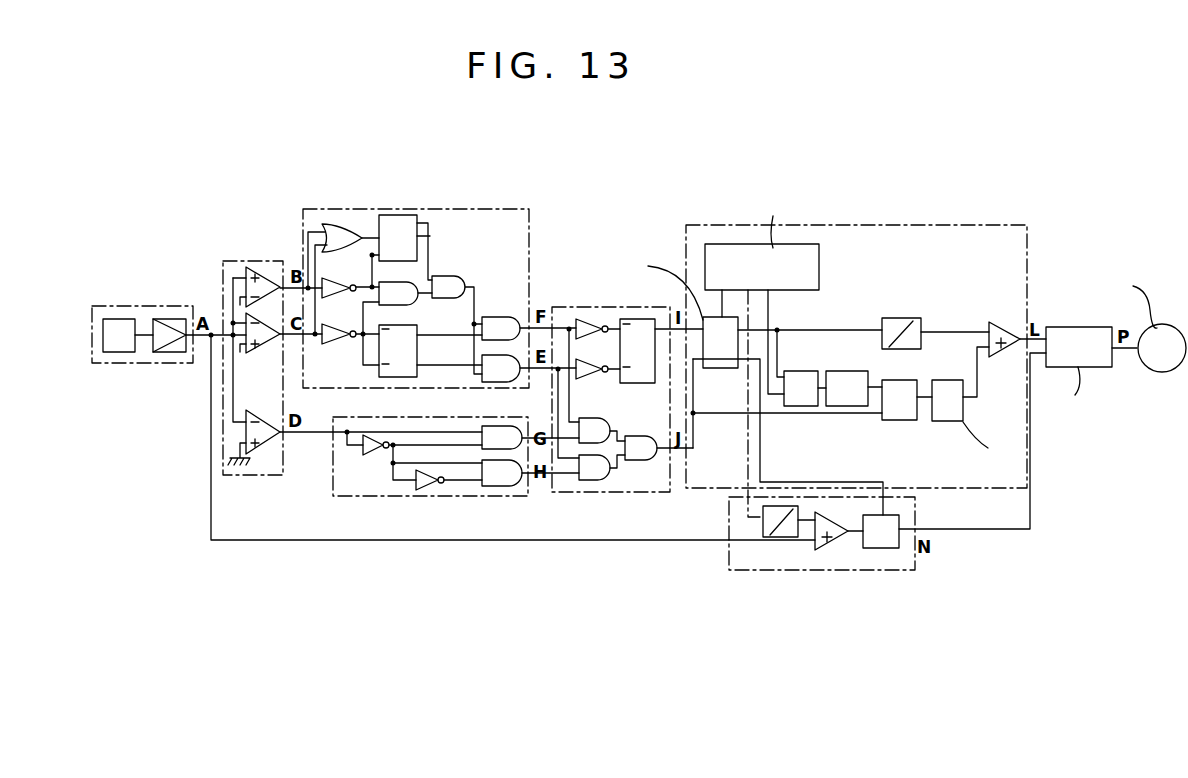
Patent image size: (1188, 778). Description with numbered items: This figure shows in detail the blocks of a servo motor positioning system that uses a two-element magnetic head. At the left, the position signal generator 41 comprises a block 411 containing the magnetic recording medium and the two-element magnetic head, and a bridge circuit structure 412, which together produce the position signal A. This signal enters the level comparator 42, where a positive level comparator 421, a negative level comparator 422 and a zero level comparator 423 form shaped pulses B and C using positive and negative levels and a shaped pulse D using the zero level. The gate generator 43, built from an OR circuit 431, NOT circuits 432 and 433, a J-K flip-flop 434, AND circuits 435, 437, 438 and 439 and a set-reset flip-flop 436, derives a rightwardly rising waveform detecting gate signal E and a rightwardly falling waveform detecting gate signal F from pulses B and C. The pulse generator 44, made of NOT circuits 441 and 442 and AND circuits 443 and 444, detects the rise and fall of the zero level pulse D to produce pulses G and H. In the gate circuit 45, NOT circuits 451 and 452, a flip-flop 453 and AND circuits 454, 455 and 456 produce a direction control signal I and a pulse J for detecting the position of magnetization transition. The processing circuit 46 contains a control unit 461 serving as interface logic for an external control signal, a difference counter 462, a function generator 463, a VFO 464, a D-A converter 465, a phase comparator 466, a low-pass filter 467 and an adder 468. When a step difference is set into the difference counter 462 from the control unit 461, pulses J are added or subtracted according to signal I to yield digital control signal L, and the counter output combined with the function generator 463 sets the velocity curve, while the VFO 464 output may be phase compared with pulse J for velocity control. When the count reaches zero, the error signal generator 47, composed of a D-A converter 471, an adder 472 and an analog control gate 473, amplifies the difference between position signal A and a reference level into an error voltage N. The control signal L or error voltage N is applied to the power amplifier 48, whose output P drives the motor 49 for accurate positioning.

The position signal generator 41 is at (106, 363).
The block including the magnetic recording medium and the two-element magnetic head 411 is at (114, 319).
The bridge circuit structure 412 is at (180, 352).
The level comparator 42 is at (232, 261).
The positive level comparator 421 is at (270, 267).
The negative level comparator 422 is at (263, 353).
The zero level comparator 423 is at (270, 440).
The gate generator 43 is at (332, 209).
The OR circuit 431 is at (352, 224).
The NOT circuit 432 is at (350, 279).
The NOT circuit 433 is at (338, 344).
The J-K flip-flop 434 is at (421, 216).
The AND circuit 435 is at (405, 284).
The set-reset flip-flop 436 is at (406, 377).
The AND circuit 437 is at (458, 276).
The AND circuit 438 is at (500, 317).
The AND circuit 439 is at (488, 356).
The pulse generator 44 is at (380, 417).
The NOT circuit 441 is at (372, 455).
The NOT circuit 442 is at (429, 490).
The AND circuit 443 is at (494, 426).
The AND circuit 444 is at (503, 486).
The gate circuit 45 is at (556, 307).
The NOT circuit 451 is at (594, 319).
The NOT circuit 452 is at (593, 379).
The flip-flop 453 is at (643, 383).
The AND circuit 454 is at (610, 422).
The AND circuit 455 is at (593, 480).
The AND circuit 456 is at (640, 460).
The processing circuit 46 is at (925, 225).
The control unit 461 is at (819, 272).
The difference counter 462 is at (738, 325).
The function generator 463 is at (801, 406).
The VFO 464 is at (851, 406).
The D-A converter 465 is at (910, 313).
The phase comparator 466 is at (895, 420).
The low-pass filter 467 is at (945, 421).
The adder 468 is at (1000, 322).
The error signal generator 47 is at (729, 558).
The D-A converter 471 is at (768, 537).
The adder 472 is at (826, 550).
The analog control gate 473 is at (884, 548).
The power amplifier 48 is at (1066, 327).
The motor 49 is at (1156, 331).